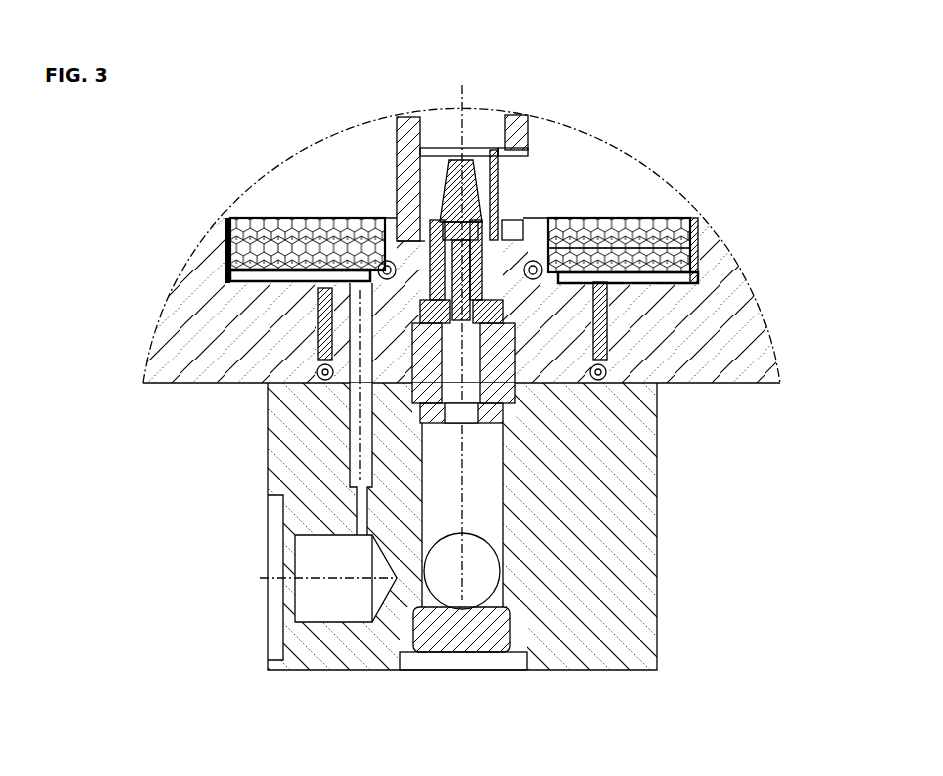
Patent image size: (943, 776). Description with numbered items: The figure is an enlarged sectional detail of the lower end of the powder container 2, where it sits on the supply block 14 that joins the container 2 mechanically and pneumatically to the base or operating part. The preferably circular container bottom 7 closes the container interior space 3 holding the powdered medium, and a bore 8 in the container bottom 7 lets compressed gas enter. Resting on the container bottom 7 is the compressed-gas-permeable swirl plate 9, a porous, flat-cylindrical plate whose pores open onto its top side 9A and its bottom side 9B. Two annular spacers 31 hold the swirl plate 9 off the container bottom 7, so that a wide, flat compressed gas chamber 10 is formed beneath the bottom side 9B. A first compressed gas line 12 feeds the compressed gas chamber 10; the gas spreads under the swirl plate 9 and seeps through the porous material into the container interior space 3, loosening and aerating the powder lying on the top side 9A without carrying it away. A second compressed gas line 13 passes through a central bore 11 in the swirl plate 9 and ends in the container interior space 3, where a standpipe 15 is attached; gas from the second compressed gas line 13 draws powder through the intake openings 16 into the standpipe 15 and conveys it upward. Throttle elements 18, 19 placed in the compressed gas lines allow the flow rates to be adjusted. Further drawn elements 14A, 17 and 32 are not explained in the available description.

The container 2 is at (690, 150).
The container interior space 3 is at (313, 200).
The container bottom 7 is at (745, 386).
The bore 8 is at (580, 378).
The compressed-gas-permeable swirl plate 9 is at (615, 218).
The top side 9A is at (666, 216).
The bottom side 9B is at (665, 285).
The compressed gas chamber 10 is at (233, 280).
The bore 11 is at (392, 234).
The first compressed gas line 12 is at (357, 427).
The second compressed gas line 13 is at (488, 515).
The supply block 14 is at (640, 605).
The valve seat insert 14A is at (540, 205).
The standpipe 15 is at (512, 125).
The intake openings 16 is at (440, 165).
The axis 17 is at (480, 200).
The throttle element 18 is at (470, 597).
The throttle element 19 is at (362, 535).
The spacer 31 is at (585, 266).
The sleeve 32 is at (452, 427).